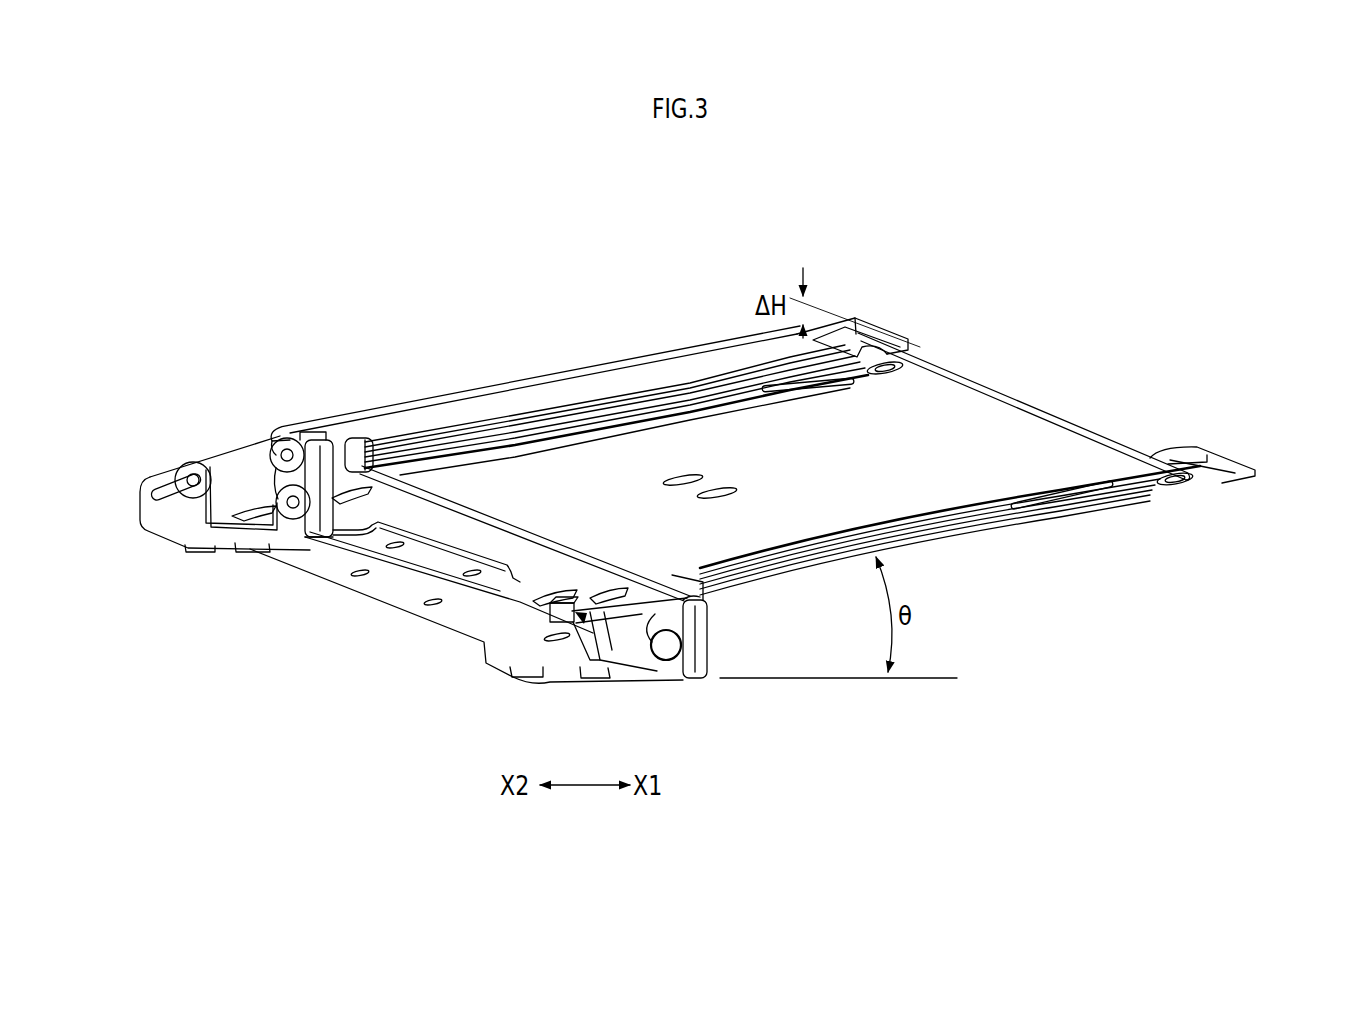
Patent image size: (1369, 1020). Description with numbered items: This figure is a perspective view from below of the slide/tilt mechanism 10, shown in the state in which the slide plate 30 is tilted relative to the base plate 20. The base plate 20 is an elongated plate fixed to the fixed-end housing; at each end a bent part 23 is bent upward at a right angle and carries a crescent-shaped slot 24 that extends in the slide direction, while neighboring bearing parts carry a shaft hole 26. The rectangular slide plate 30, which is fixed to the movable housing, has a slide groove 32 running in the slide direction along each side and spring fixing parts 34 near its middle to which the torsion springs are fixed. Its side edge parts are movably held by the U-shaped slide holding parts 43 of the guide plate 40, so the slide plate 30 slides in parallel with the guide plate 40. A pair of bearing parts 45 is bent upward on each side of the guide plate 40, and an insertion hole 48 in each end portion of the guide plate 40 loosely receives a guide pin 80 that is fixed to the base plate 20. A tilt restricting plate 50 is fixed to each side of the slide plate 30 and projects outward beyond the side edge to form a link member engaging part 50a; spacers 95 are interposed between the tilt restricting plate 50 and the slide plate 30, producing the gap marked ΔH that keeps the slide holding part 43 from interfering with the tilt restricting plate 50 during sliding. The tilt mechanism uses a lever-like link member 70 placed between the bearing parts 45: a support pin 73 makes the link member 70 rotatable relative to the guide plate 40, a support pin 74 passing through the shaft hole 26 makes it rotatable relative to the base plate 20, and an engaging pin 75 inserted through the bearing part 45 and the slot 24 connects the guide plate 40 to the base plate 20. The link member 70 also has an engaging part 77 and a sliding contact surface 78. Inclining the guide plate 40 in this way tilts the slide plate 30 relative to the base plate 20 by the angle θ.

The slide/tilt mechanism 10 is at (1032, 224).
The base plate 20 is at (408, 600).
The bent part 23 is at (145, 512).
The slot 24 is at (160, 486).
The shaft hole 26 is at (294, 528).
The slide plate 30 is at (1070, 416).
The slide groove 32 is at (773, 402).
The spring fixing part 34 is at (700, 483).
The guide plate 40 is at (517, 578).
The slide holding part 43 is at (372, 452).
The bearing part 45 is at (263, 460).
The insertion hole 48 is at (340, 518).
The tilt restricting plate 50 is at (691, 342).
The link member engaging part 50a is at (633, 378).
The link member 70 is at (330, 481).
The support pin 73 is at (284, 438).
The support pin 74 is at (272, 522).
The engaging pin 75 is at (192, 462).
The engaging part 77 is at (292, 432).
The sliding contact surface 78 is at (322, 440).
The guide pin 80 is at (583, 673).
The spacer 95 is at (900, 348).